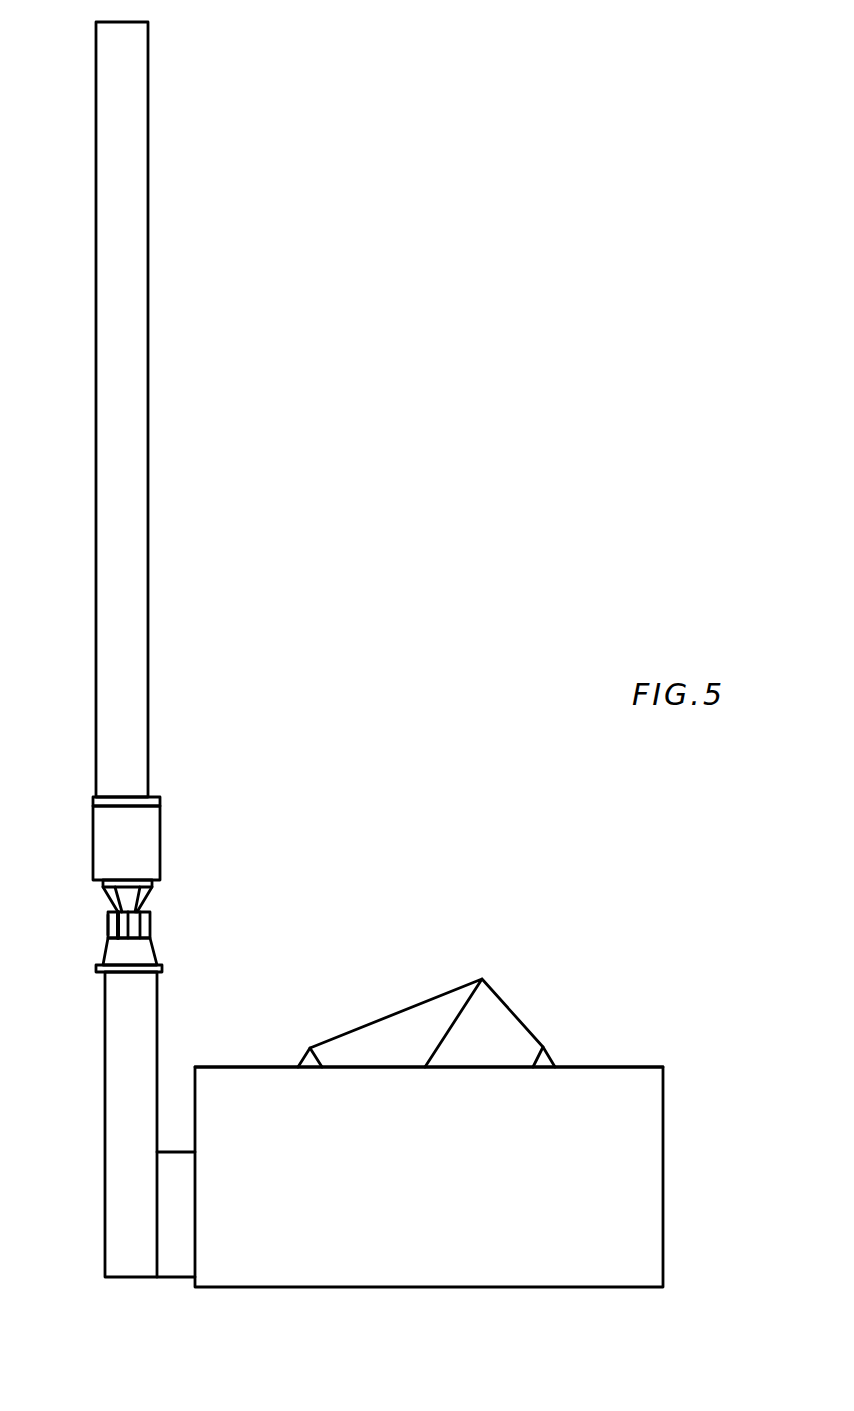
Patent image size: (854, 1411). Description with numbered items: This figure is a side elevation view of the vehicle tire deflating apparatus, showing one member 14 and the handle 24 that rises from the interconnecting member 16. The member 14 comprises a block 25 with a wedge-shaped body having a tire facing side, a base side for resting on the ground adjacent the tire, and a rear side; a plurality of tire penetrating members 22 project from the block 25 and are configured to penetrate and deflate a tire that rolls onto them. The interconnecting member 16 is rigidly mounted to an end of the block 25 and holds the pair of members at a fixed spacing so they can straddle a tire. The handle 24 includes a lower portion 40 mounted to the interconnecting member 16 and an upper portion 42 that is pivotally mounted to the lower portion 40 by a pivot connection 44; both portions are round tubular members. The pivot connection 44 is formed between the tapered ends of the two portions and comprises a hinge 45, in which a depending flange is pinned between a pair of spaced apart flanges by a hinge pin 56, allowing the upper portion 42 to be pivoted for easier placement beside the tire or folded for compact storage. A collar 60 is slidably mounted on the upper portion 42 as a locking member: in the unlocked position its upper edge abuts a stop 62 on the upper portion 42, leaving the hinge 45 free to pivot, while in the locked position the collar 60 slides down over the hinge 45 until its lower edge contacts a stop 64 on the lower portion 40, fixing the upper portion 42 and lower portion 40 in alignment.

The member 14 is at (630, 1052).
The interconnecting member 16 is at (173, 1263).
The tire penetrating members 22 is at (426, 1009).
The handle 24 is at (205, 418).
The block 25 is at (650, 1106).
The lower portion 40 is at (117, 1052).
The upper portion 42 is at (127, 153).
The pivot connection 44 is at (225, 900).
The hinge 45 is at (128, 952).
The hinge pin 56 is at (108, 926).
The collar 60 is at (147, 858).
The stop 62 is at (163, 790).
The stop 64 is at (170, 969).